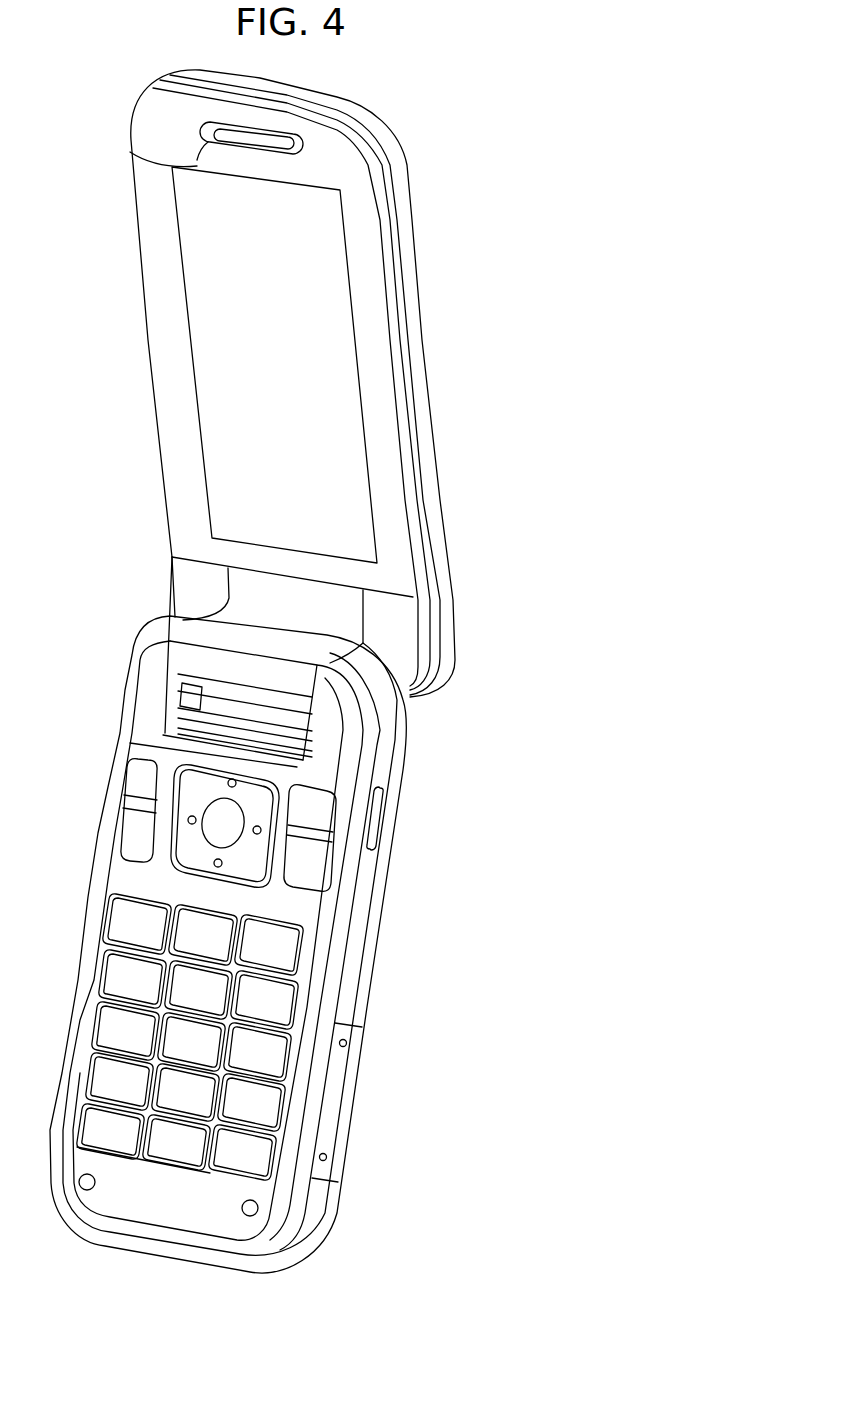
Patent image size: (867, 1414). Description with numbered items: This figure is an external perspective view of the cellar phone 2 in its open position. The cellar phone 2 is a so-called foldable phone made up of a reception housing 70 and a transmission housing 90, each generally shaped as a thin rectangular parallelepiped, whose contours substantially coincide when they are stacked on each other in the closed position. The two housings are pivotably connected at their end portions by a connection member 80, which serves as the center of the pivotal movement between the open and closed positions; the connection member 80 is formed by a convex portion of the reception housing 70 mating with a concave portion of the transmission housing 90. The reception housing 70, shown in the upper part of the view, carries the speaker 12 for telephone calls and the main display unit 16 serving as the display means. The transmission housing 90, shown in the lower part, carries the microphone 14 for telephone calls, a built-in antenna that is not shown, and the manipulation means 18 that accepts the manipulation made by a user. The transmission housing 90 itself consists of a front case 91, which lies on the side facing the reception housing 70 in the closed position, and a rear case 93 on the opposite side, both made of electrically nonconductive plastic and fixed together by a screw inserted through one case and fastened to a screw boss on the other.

The cellar phone 2 is at (598, 272).
The speaker 12 is at (130, 152).
The microphone 14 is at (170, 1205).
The main display unit 16 is at (355, 363).
The manipulation means 18 is at (273, 1033).
The reception housing 70 is at (380, 467).
The connection member 80 is at (457, 686).
The transmission housing 90 is at (367, 911).
The front case 91 is at (360, 763).
The rear case 93 is at (388, 867).